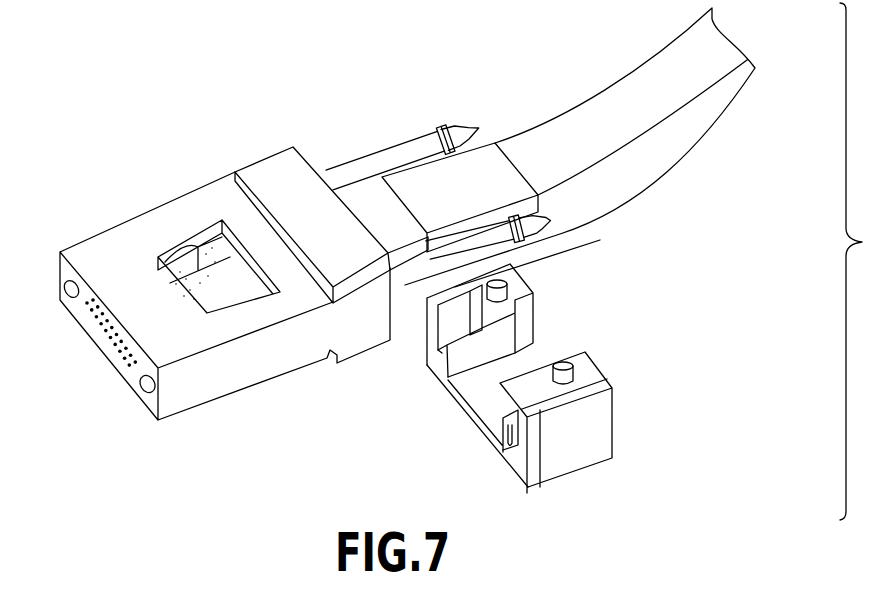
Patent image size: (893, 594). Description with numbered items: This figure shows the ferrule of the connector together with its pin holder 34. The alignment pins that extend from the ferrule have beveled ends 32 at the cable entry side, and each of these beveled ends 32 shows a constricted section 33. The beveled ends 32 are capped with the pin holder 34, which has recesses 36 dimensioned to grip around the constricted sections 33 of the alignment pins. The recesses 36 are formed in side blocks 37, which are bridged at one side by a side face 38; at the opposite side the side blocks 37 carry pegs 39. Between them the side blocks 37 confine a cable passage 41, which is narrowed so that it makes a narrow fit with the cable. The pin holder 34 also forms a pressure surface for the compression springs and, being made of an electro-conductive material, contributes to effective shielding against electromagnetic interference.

The beveled ends 32 is at (480, 120).
The constricted section 33 is at (440, 118).
The pin holder 34 is at (517, 348).
The recesses 36 is at (508, 447).
The side blocks 37 is at (537, 292).
The side face 38 is at (512, 382).
The pegs 39 is at (514, 284).
The cable passage 41 is at (522, 348).